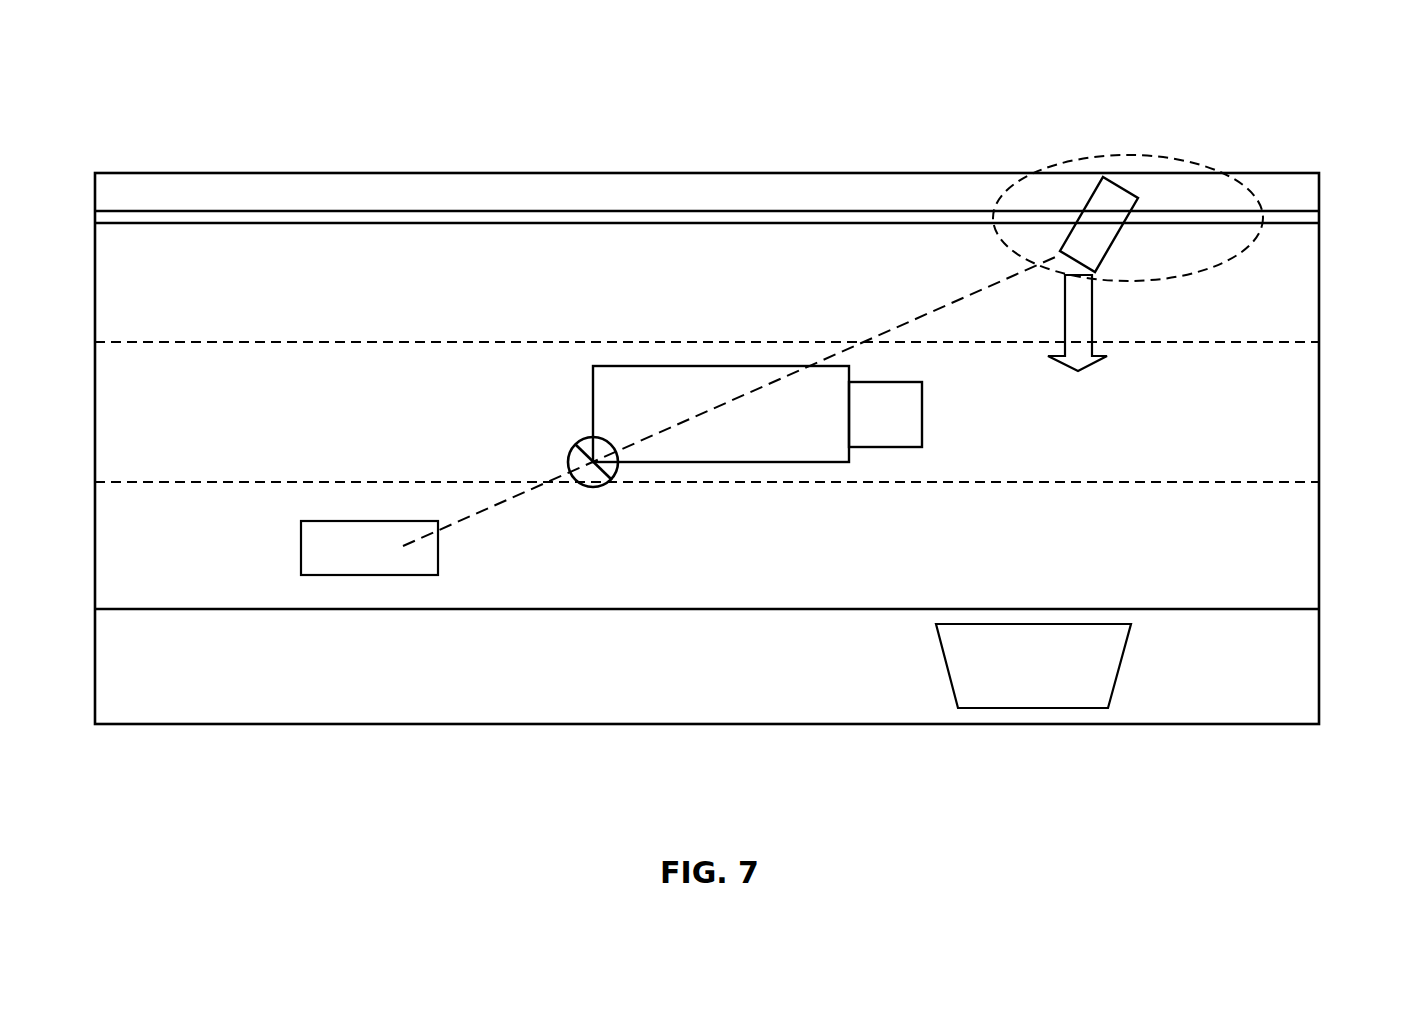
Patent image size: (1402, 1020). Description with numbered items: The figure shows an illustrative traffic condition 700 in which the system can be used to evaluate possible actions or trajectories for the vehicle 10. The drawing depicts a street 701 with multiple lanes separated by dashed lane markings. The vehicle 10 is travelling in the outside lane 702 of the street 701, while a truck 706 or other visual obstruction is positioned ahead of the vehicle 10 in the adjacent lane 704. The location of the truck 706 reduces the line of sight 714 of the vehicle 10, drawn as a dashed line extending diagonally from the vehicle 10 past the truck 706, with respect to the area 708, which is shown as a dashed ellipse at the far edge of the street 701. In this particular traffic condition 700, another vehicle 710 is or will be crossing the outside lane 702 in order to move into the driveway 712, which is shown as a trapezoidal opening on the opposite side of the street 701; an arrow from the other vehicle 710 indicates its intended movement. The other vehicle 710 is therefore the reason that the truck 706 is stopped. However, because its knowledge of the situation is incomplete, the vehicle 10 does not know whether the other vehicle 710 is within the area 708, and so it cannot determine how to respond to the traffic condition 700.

The traffic condition 700 is at (166, 70).
The street 701 is at (1321, 337).
The outside lane 702 is at (94, 559).
The adjacent lane 704 is at (94, 414).
The truck 706 is at (610, 365).
The area 708 is at (1160, 156).
The other vehicle 710 is at (1090, 200).
The driveway 712 is at (972, 708).
The line of sight 714 is at (497, 506).
The vehicle 10 is at (312, 576).